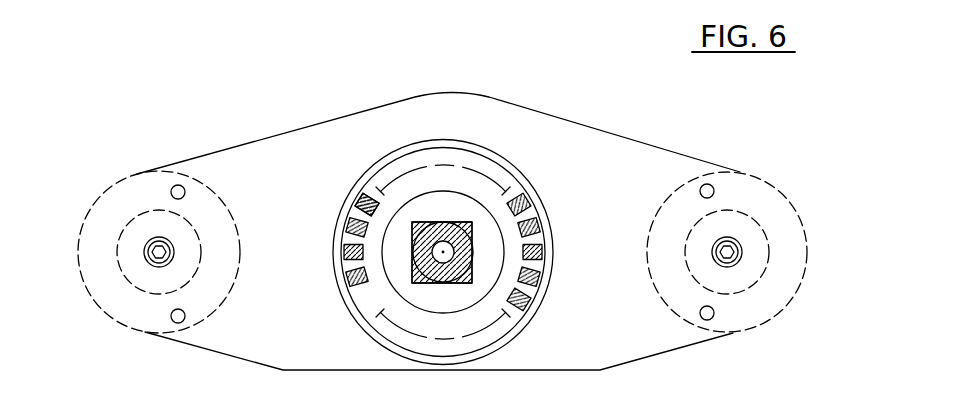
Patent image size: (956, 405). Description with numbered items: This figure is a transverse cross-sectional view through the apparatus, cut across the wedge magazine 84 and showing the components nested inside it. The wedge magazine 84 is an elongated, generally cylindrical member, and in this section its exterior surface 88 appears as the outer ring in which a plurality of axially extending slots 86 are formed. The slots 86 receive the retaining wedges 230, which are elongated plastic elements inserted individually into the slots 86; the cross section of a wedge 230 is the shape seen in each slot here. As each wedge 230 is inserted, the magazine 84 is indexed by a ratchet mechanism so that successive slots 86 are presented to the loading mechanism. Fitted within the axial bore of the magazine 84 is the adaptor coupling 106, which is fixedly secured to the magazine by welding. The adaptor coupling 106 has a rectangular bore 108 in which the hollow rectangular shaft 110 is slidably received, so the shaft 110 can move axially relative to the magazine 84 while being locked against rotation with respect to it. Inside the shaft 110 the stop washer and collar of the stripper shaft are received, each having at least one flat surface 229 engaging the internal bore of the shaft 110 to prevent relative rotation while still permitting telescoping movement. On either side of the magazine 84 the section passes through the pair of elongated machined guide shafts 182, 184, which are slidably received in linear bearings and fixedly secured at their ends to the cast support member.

The wedge magazine 84 is at (514, 182).
The axially extending slots 86 is at (530, 203).
The exterior surface 88 is at (520, 329).
The adaptor coupling 106 is at (490, 247).
The rectangular bore 108 is at (473, 277).
The rectangular shaft 110 is at (412, 280).
The guide shaft 182 is at (748, 243).
The guide shaft 184 is at (153, 282).
The flat surface 229 is at (437, 222).
The retaining wedges 230 is at (366, 193).